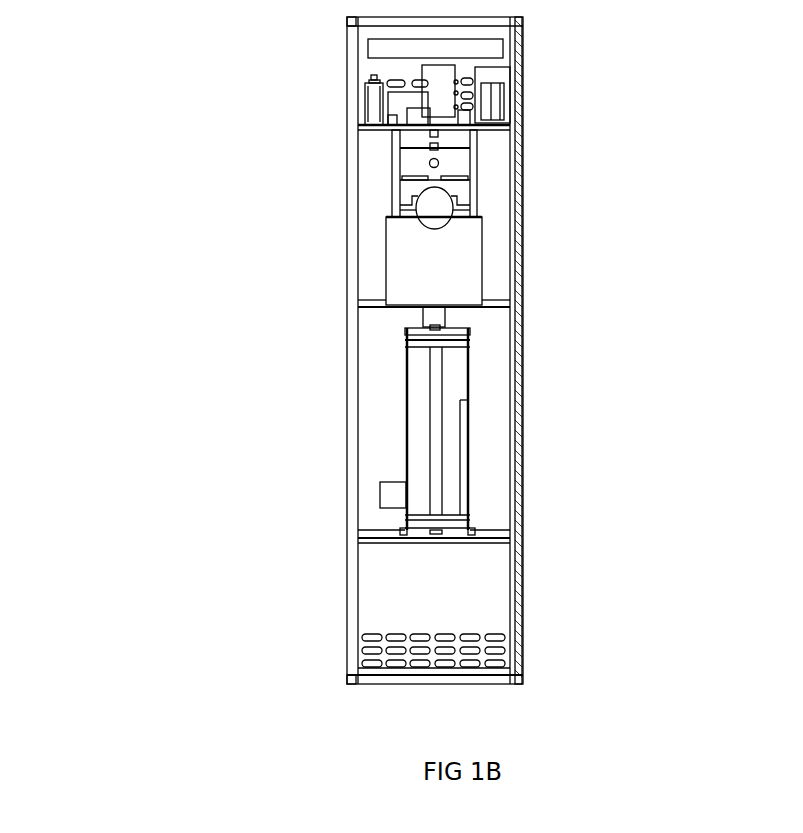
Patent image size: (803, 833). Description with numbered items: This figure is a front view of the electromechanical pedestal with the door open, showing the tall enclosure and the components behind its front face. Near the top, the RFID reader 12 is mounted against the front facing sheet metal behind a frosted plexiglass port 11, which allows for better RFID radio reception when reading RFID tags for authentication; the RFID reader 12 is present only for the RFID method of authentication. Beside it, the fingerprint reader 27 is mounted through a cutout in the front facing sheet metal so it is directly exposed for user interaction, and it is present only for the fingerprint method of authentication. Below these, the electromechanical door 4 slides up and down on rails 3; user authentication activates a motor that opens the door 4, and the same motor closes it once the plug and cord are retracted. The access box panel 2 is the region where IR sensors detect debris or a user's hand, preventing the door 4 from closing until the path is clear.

The access box panel 2 is at (372, 182).
The rails 3 is at (478, 162).
The electromechanical door 4 is at (420, 253).
The frosted plexiglass port 11 is at (360, 122).
The RFID reader 12 is at (373, 92).
The fingerprint reader 27 is at (492, 100).